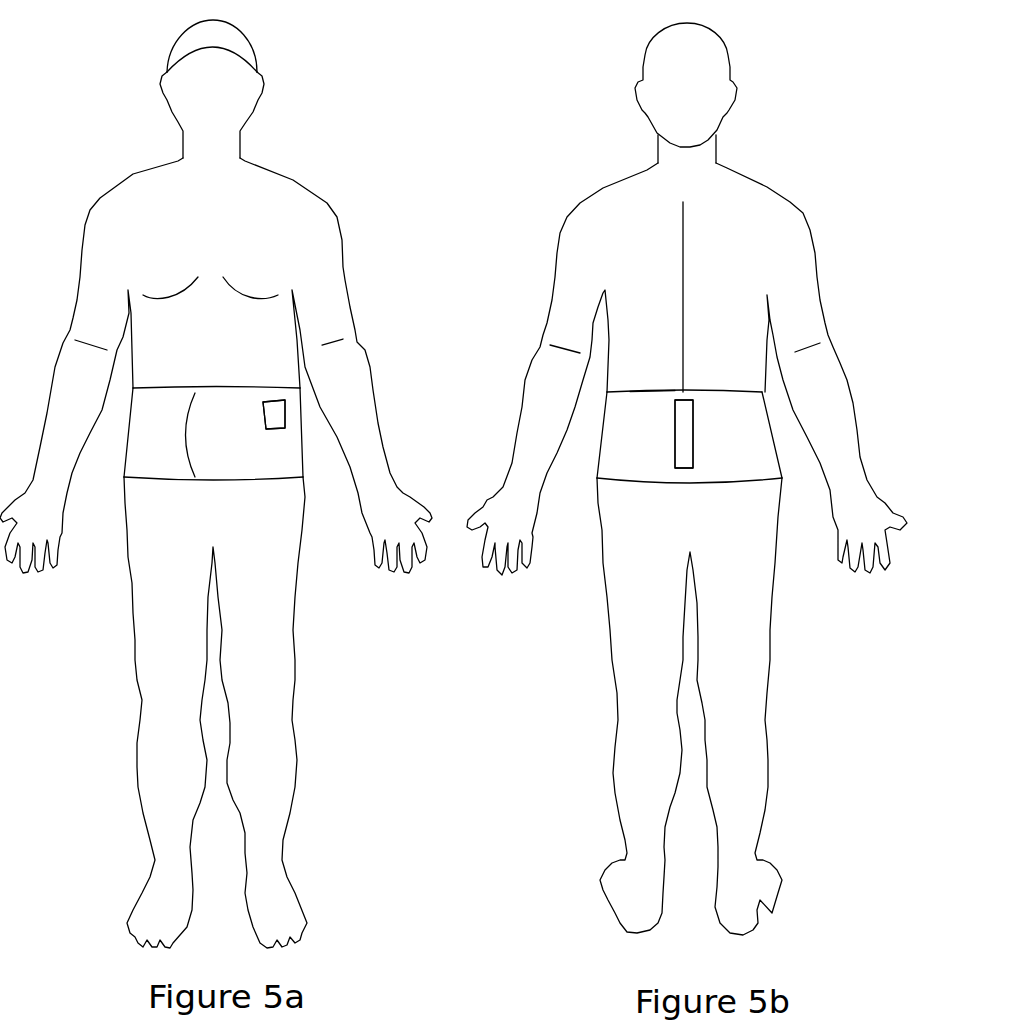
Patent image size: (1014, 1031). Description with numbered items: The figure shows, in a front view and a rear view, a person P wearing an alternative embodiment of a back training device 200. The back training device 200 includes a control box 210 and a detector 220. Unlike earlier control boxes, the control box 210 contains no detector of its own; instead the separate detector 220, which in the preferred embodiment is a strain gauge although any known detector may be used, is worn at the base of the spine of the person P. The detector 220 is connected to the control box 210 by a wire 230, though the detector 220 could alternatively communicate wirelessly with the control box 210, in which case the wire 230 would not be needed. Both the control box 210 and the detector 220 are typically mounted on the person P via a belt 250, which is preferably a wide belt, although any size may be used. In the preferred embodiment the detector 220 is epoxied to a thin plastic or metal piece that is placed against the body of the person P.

In FIG. 5A, the person P is at (292, 183).
In FIG. 5B, the person P is at (768, 188).
In FIG. 5A, the back training device 200 is at (291, 443).
In FIG. 5B, the back training device 200 is at (663, 456).
In FIG. 5A, the control box 210 is at (287, 412).
In FIG. 5B, the detector 220 is at (678, 430).
In FIG. 5B, the wire 230 is at (633, 403).
In FIG. 5A, the belt 250 is at (143, 455).
In FIG. 5B, the belt 250 is at (757, 457).